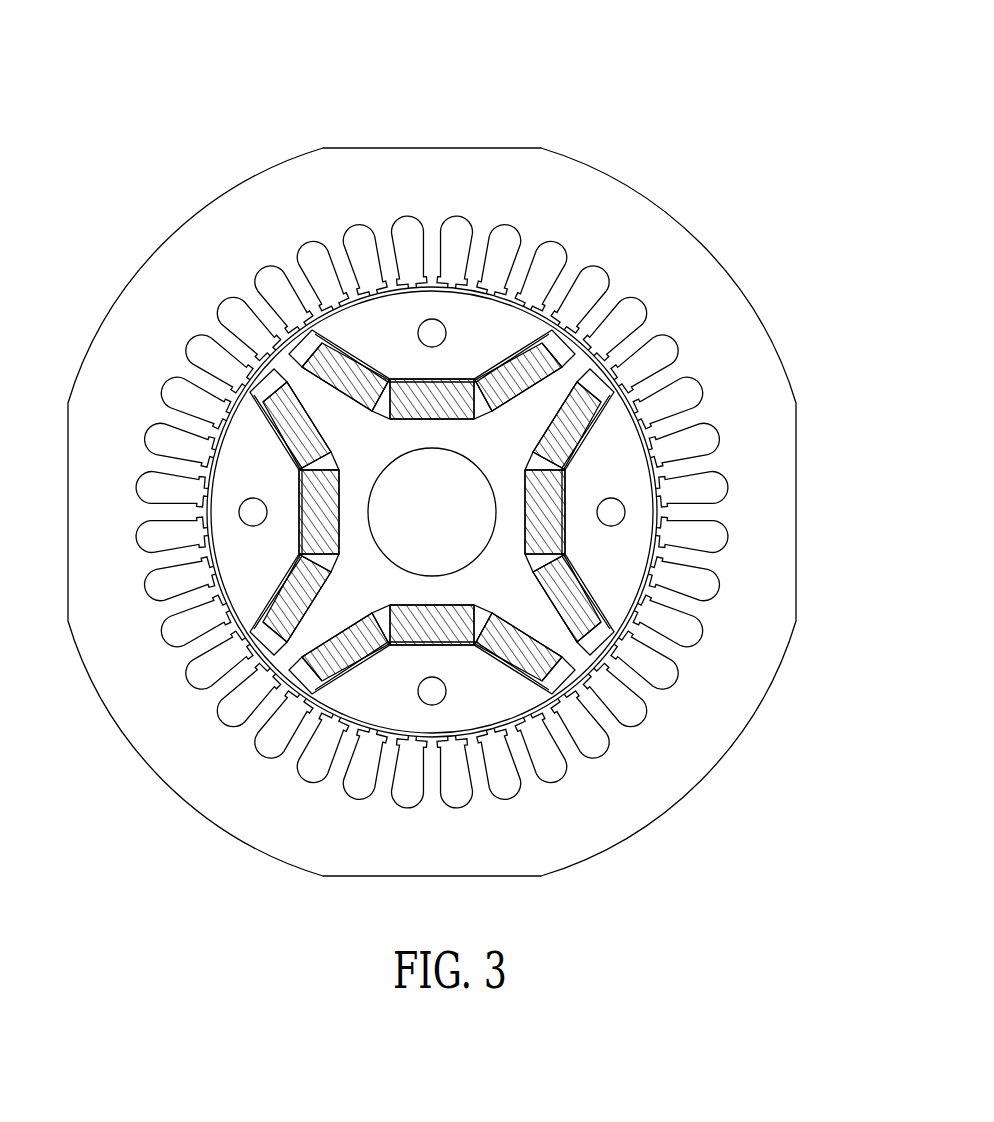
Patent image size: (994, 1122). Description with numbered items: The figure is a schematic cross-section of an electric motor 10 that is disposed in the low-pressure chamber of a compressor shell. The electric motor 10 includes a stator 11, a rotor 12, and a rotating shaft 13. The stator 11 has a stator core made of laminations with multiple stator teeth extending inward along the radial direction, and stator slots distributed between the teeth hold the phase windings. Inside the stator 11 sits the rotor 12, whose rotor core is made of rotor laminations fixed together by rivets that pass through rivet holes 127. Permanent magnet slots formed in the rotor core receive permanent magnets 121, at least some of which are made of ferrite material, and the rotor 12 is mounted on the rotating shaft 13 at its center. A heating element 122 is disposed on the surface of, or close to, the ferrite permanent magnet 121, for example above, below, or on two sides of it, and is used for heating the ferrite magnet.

The electric motor 10 is at (652, 115).
The stator 11 is at (718, 330).
The rotor 12 is at (375, 318).
The rotating shaft 13 is at (418, 498).
The permanent magnet 121 is at (475, 390).
The heating element 122 is at (513, 352).
The rivet hole 127 is at (432, 690).